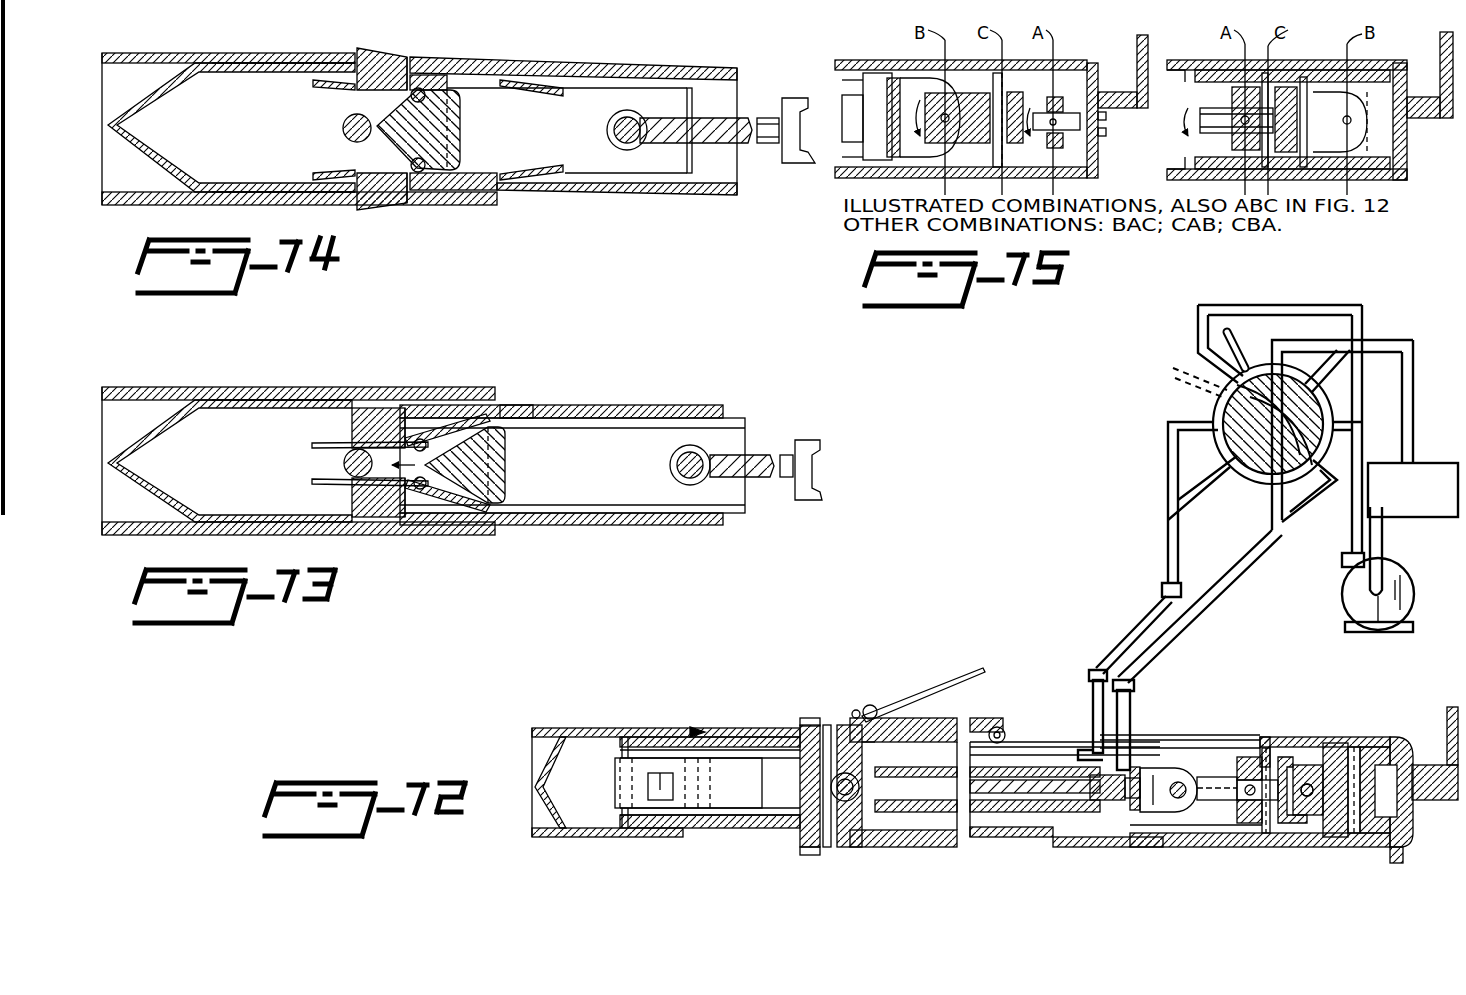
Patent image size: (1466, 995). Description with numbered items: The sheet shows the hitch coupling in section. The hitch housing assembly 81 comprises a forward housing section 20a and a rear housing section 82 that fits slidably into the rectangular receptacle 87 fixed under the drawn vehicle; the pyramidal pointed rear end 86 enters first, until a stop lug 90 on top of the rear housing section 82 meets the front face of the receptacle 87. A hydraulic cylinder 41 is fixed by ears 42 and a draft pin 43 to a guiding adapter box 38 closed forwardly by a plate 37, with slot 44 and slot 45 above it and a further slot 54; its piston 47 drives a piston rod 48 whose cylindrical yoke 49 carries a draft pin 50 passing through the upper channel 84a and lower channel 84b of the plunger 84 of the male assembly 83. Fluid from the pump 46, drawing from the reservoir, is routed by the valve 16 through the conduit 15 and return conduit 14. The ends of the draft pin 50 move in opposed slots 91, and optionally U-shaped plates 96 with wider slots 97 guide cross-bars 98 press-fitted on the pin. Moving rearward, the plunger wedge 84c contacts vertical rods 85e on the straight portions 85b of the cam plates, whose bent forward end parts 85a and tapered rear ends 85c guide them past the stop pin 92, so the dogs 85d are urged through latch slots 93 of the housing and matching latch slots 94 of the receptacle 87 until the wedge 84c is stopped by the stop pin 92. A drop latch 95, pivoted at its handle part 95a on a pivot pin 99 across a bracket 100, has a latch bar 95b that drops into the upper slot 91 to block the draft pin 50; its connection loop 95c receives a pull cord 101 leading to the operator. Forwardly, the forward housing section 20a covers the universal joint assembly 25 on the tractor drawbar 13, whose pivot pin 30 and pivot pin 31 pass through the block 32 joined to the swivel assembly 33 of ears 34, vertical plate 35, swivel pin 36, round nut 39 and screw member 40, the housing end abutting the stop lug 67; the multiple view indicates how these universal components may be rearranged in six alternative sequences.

In FIG. 12, the tractor drawbar 13 is at (1412, 822).
In FIG. 12, the return conduit 14 is at (1142, 615).
In FIG. 12, the conduit 15 is at (1172, 623).
In FIG. 12, the valve 16 is at (1248, 480).
In FIG. 12, the forward housing section 20a is at (1062, 738).
In FIG. 12, the universal joint assembly 25 is at (1310, 822).
In FIG. 12, the pivot pin 30 is at (1362, 747).
In FIG. 12, the pivot pin 31 is at (1332, 745).
In FIG. 12, the block 32 is at (1350, 825).
In FIG. 12, the swivel assembly 33 is at (1290, 822).
In FIG. 12, the ears 34 is at (1308, 765).
In FIG. 12, the vertical plate 35 is at (1285, 757).
In FIG. 12, the swivel pin 36 is at (1262, 740).
In FIG. 12, the plate 37 is at (1266, 735).
In FIG. 12, the guiding adapter box 38 is at (1170, 815).
In FIG. 12, the round nut 39 is at (1248, 755).
In FIG. 12, the screw member 40 is at (1232, 800).
In FIG. 14, the hydraulic cylinder 41 is at (798, 100).
In FIG. 13, the hydraulic cylinder 41 is at (810, 440).
In FIG. 12, the hydraulic cylinder 41 is at (1045, 825).
In FIG. 12, the ears 42 is at (1150, 814).
In FIG. 12, the draft pin 43 is at (1182, 754).
In FIG. 12, the slot 44 is at (1200, 735).
In FIG. 12, the slot 45 is at (1155, 738).
In FIG. 12, the pump 46 is at (1405, 572).
In FIG. 12, the piston 47 is at (1105, 802).
In FIG. 14, the piston rod 48 is at (758, 118).
In FIG. 13, the piston rod 48 is at (770, 455).
In FIG. 12, the piston rod 48 is at (1005, 795).
In FIG. 14, the cylindrical yoke 49 is at (614, 113).
In FIG. 13, the cylindrical yoke 49 is at (672, 460).
In FIG. 12, the cylindrical yoke 49 is at (860, 800).
In FIG. 14, the draft pin 50 is at (616, 142).
In FIG. 13, the draft pin 50 is at (676, 476).
In FIG. 12, the draft pin 50 is at (845, 800).
In FIG. 12, the slot 54 is at (1215, 760).
In FIG. 12, the stop lug 67 is at (1398, 863).
In FIG. 12, the housing assembly 81 is at (1005, 835).
In FIG. 14, the rear housing section 82 is at (640, 64).
In FIG. 13, the rear housing section 82 is at (635, 404).
In FIG. 12, the rear housing section 82 is at (770, 728).
In FIG. 13, the male assembly 83 is at (545, 488).
In FIG. 14, the plunger 84 is at (695, 93).
In FIG. 13, the plunger 84 is at (738, 412).
In FIG. 14, the upper channel 84a is at (648, 86).
In FIG. 13, the upper channel 84a is at (655, 418).
In FIG. 13, the lower channel 84b is at (605, 510).
In FIG. 14, the plunger wedge 84c is at (500, 131).
In FIG. 13, the plunger wedge 84c is at (510, 453).
In FIG. 14, the forward end parts 85a is at (552, 92).
In FIG. 13, the forward end parts 85a is at (530, 406).
In FIG. 14, the straight portions 85b is at (412, 97).
In FIG. 13, the straight portions 85b is at (420, 490).
In FIG. 14, the tapered rear ends 85c is at (318, 83).
In FIG. 13, the tapered rear ends 85c is at (318, 450).
In FIG. 14, the dogs 85d is at (404, 235).
In FIG. 13, the dogs 85d is at (348, 424).
In FIG. 12, the dogs 85d is at (660, 775).
In FIG. 14, the vertical rods 85e is at (362, 158).
In FIG. 13, the vertical rods 85e is at (445, 440).
In FIG. 12, the vertical rods 85e is at (615, 781).
In FIG. 14, the pyramidal pointed rear end 86 is at (140, 90).
In FIG. 13, the pyramidal pointed rear end 86 is at (160, 428).
In FIG. 12, the pyramidal pointed rear end 86 is at (548, 758).
In FIG. 14, the receptacle 87 is at (224, 46).
In FIG. 13, the receptacle 87 is at (262, 384).
In FIG. 12, the stop lug 90 is at (700, 730).
In FIG. 12, the slots 91 is at (836, 725).
In FIG. 14, the stop pin 92 is at (344, 128).
In FIG. 13, the stop pin 92 is at (345, 464).
In FIG. 12, the stop pin 92 is at (625, 737).
In FIG. 14, the latch slots 93 is at (442, 57).
In FIG. 13, the latch slots 93 is at (425, 408).
In FIG. 14, the latch slots 94 is at (340, 57).
In FIG. 13, the latch slots 94 is at (398, 392).
In FIG. 12, the drop latch 95 is at (905, 700).
In FIG. 12, the handle part 95a is at (950, 718).
In FIG. 12, the latch bar 95b is at (856, 710).
In FIG. 12, the connection loop 95c is at (872, 705).
In FIG. 12, the U-shaped plates 96 is at (815, 725).
In FIG. 12, the slots 97 is at (910, 735).
In FIG. 12, the cross-bars 98 is at (812, 718).
In FIG. 12, the pivot pin 99 is at (1010, 740).
In FIG. 12, the bracket 100 is at (1002, 728).
In FIG. 12, the pull cord 101 is at (980, 668).